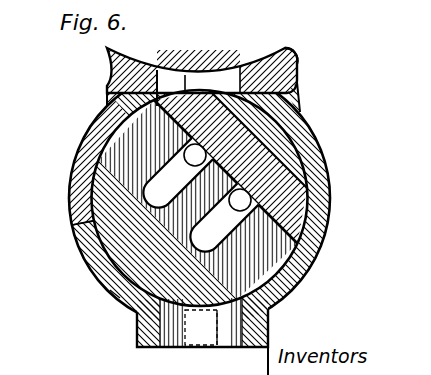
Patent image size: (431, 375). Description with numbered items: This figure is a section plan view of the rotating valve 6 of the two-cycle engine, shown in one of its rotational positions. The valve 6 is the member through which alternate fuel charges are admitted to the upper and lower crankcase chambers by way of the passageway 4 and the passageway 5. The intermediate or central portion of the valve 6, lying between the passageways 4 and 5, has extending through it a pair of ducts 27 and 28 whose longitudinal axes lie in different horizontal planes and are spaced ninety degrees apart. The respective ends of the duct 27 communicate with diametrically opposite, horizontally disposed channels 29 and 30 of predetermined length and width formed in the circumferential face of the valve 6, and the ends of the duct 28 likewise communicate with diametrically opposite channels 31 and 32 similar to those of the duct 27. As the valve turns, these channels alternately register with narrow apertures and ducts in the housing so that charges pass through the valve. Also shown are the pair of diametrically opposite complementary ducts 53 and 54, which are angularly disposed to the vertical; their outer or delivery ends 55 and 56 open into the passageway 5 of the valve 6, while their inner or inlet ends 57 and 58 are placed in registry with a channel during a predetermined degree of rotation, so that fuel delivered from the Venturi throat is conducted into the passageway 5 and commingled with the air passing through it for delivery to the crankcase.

The passageway 4 is at (185, 128).
The passageway 5 is at (80, 243).
The rotating valve 6 is at (282, 128).
The duct 27 is at (297, 284).
The duct 28 is at (100, 273).
The channel 29 is at (90, 150).
The channel 30 is at (300, 227).
The channel 31 is at (323, 163).
The channel 32 is at (97, 230).
The complementary duct 53 is at (132, 318).
The complementary duct 54 is at (302, 66).
The delivery end 55 is at (112, 293).
The delivery end 56 is at (230, 90).
The inlet end 57 is at (103, 283).
The inlet end 58 is at (298, 110).